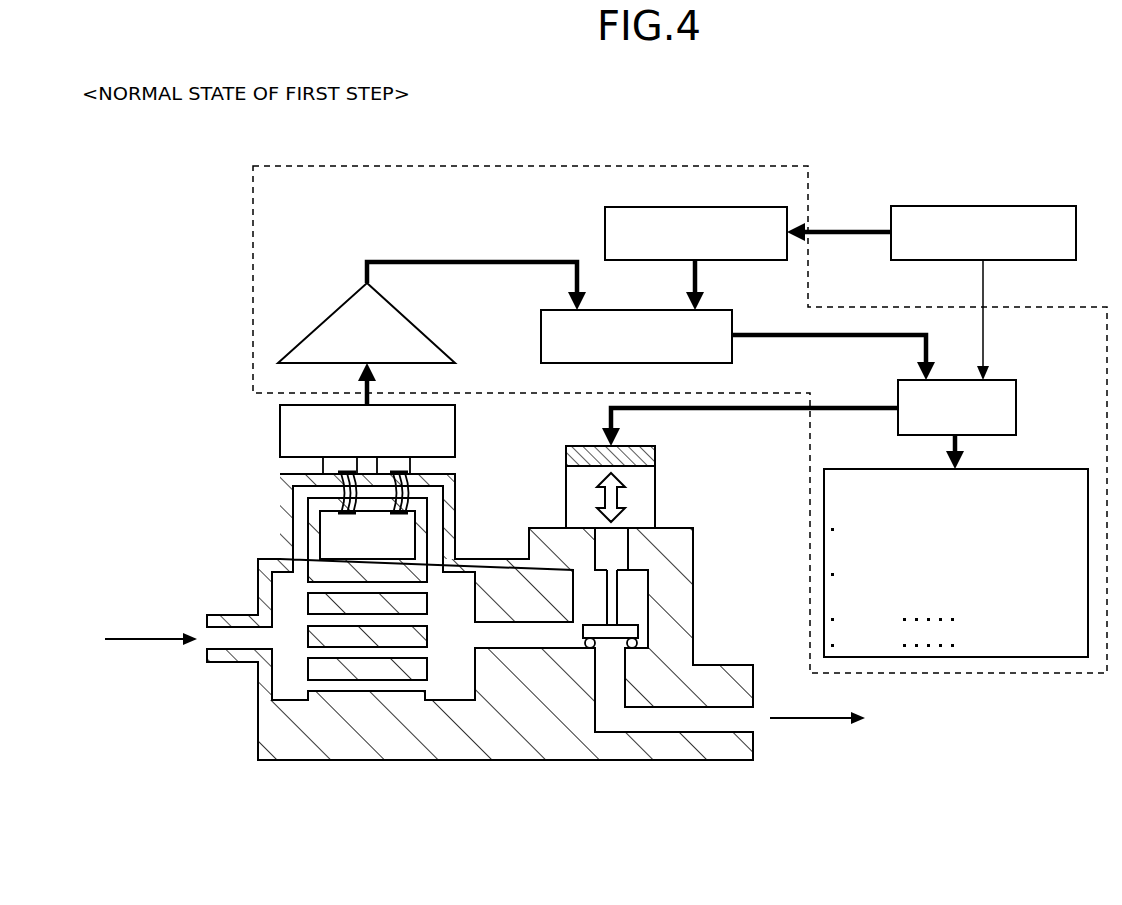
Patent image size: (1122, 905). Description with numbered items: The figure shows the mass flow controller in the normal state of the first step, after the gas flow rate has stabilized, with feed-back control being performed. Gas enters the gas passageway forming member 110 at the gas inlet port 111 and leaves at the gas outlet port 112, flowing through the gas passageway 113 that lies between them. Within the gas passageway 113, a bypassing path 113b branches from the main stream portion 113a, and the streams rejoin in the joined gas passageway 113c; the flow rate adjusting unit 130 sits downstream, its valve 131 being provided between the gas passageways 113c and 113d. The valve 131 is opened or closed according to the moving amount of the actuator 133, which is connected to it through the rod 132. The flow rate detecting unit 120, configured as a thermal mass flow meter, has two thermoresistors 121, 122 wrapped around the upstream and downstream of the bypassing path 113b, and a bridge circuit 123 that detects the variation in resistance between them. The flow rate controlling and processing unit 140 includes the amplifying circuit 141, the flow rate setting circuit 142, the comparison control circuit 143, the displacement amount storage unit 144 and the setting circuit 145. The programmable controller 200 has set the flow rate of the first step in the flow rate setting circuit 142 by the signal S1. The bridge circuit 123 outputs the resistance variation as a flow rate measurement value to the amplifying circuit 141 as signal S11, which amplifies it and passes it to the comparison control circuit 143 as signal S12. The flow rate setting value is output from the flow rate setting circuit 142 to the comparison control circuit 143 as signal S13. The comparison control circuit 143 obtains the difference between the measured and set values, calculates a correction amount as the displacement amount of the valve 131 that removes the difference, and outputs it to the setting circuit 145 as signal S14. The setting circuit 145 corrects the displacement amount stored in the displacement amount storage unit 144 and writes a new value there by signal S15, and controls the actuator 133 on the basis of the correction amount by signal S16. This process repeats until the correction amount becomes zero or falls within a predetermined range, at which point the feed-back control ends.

The gas passageway forming member 110 is at (290, 760).
The gas inlet port 111 is at (207, 646).
The gas outlet port 112 is at (755, 725).
The gas passageway 113 is at (570, 669).
The main stream portion 113a is at (478, 547).
The bypassing path 113b is at (447, 693).
The joined gas passageway 113c is at (530, 632).
The gas passageway 113d is at (617, 680).
The flow rate detecting unit 120 is at (302, 542).
The thermoresistor 121 is at (340, 492).
The thermoresistor 122 is at (396, 515).
The bridge circuit 123 is at (280, 430).
The flow rate adjusting unit 130 is at (686, 547).
The valve 131 is at (664, 617).
The rod 132 is at (612, 597).
The actuator 133 is at (652, 510).
The flow rate controlling and processing unit 140 is at (253, 183).
The amplifying circuit 141 is at (332, 311).
The flow rate setting circuit 142 is at (605, 225).
The comparison control circuit 143 is at (541, 325).
The displacement amount storage unit 144 is at (1022, 657).
The setting circuit 145 is at (1000, 380).
The programmable controller 200 is at (1030, 206).
The signal S1 is at (842, 232).
The signal S11 is at (370, 384).
The signal S12 is at (432, 260).
The signal S13 is at (697, 282).
The signal S14 is at (776, 335).
The signal S15 is at (958, 452).
The signal S16 is at (850, 408).